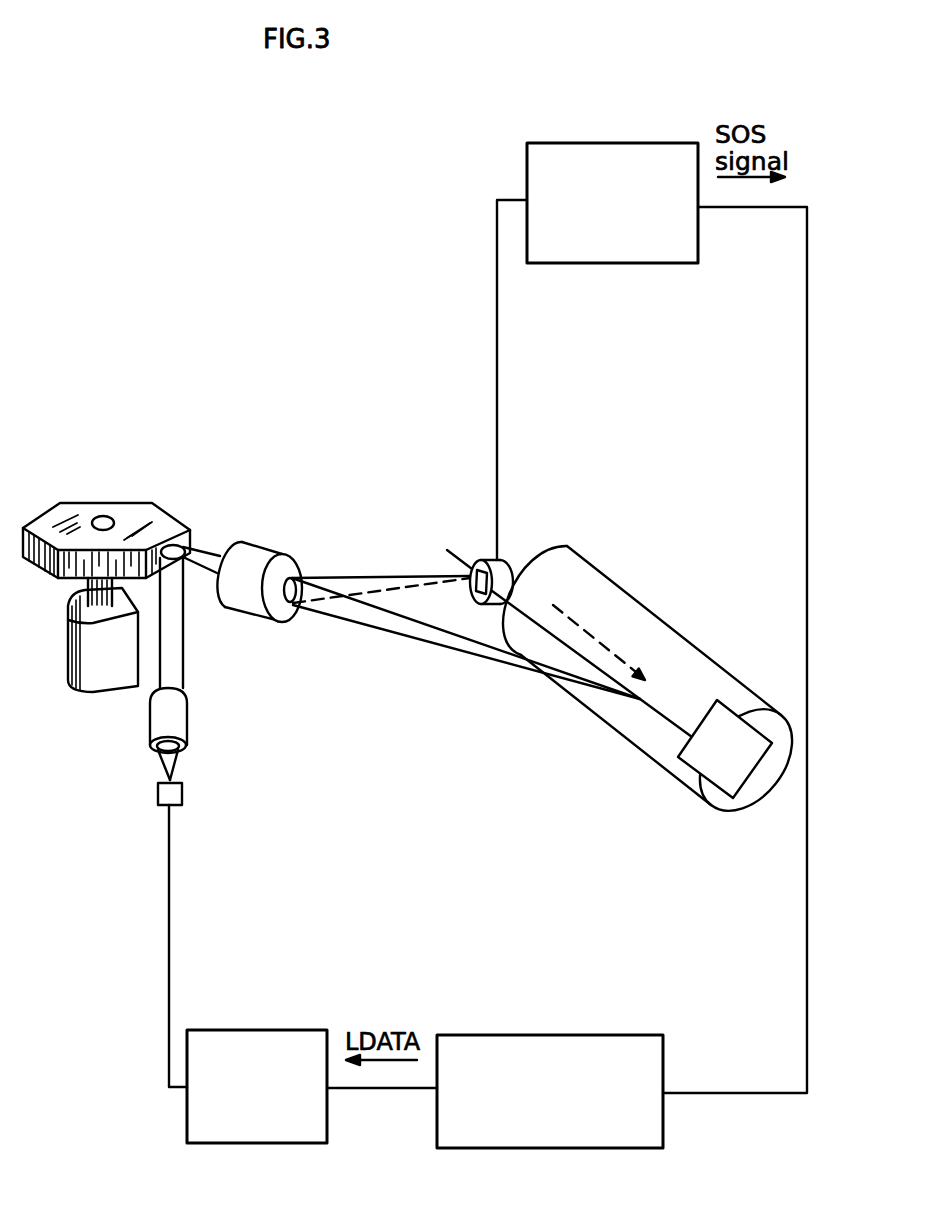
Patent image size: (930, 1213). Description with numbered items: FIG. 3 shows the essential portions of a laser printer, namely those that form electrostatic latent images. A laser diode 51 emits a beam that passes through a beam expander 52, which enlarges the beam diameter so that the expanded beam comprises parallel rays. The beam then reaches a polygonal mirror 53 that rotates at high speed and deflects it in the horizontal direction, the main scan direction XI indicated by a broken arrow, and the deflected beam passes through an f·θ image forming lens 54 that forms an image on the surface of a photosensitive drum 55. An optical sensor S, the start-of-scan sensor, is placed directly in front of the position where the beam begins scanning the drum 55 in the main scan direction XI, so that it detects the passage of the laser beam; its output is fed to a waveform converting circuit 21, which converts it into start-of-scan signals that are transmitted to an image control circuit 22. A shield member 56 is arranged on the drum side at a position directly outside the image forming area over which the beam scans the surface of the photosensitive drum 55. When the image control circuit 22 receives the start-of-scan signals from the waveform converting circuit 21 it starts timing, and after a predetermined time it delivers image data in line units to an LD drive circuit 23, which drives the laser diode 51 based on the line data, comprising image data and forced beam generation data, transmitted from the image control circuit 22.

The waveform converting circuit 21 is at (608, 264).
The image control circuit 22 is at (528, 1035).
The LD drive circuit 23 is at (278, 1030).
The laser diode 51 is at (157, 803).
The beam expander 52 is at (177, 722).
The polygonal mirror 53 is at (85, 500).
The f·θ image forming lens 54 is at (265, 542).
The photosensitive drum 55 is at (588, 554).
The shield member 56 is at (708, 762).
The optical sensor S is at (483, 558).
The main scan direction XI is at (599, 640).